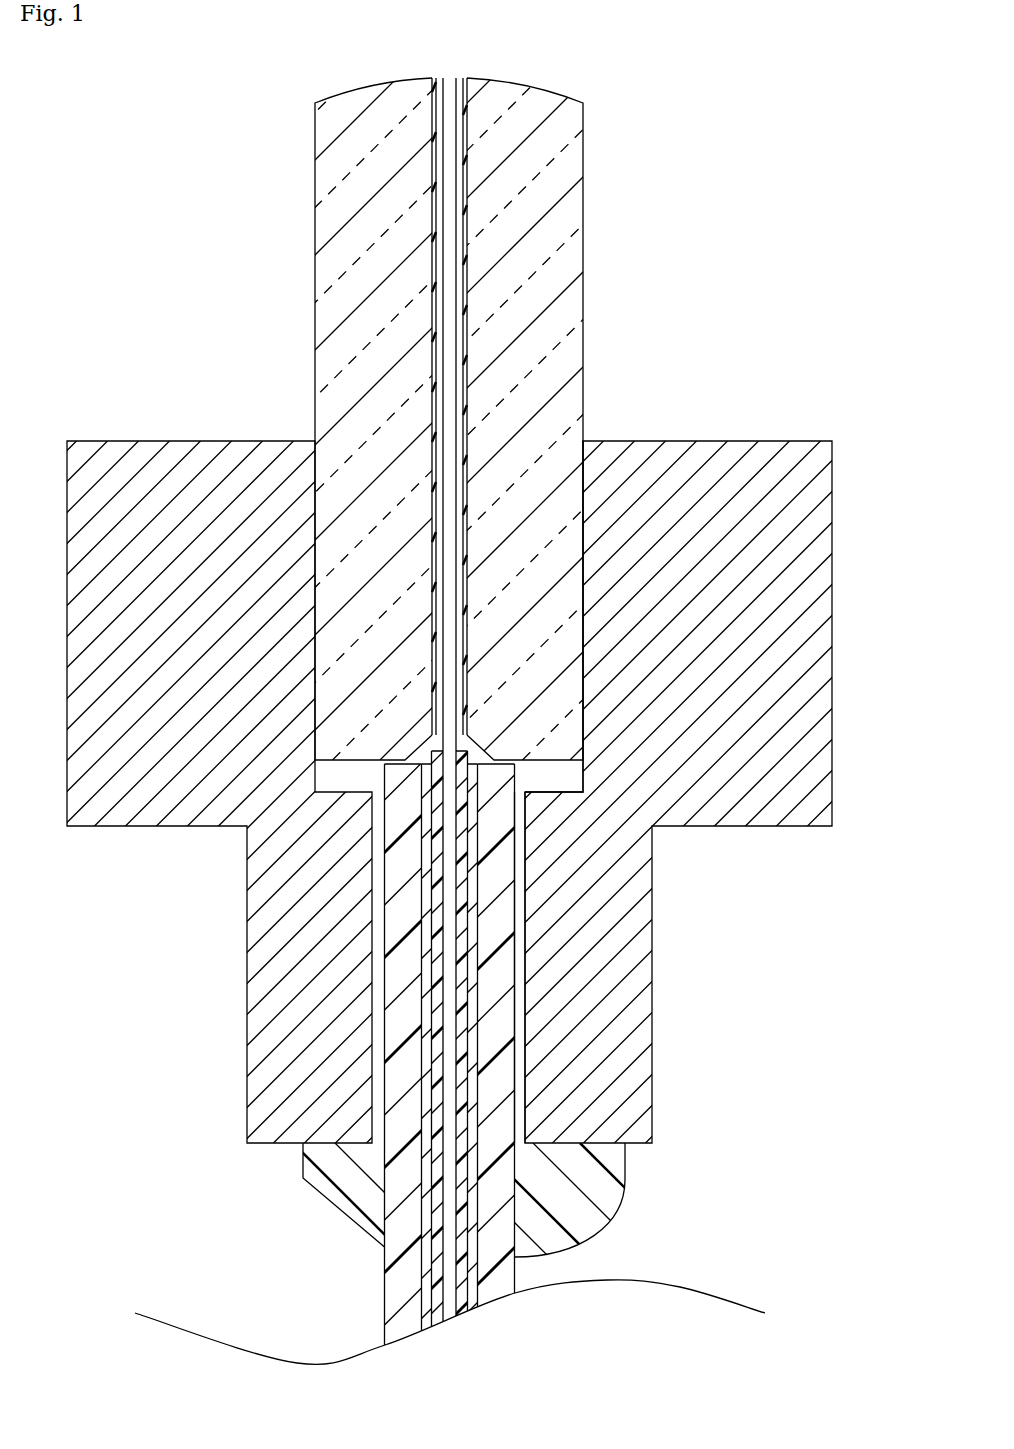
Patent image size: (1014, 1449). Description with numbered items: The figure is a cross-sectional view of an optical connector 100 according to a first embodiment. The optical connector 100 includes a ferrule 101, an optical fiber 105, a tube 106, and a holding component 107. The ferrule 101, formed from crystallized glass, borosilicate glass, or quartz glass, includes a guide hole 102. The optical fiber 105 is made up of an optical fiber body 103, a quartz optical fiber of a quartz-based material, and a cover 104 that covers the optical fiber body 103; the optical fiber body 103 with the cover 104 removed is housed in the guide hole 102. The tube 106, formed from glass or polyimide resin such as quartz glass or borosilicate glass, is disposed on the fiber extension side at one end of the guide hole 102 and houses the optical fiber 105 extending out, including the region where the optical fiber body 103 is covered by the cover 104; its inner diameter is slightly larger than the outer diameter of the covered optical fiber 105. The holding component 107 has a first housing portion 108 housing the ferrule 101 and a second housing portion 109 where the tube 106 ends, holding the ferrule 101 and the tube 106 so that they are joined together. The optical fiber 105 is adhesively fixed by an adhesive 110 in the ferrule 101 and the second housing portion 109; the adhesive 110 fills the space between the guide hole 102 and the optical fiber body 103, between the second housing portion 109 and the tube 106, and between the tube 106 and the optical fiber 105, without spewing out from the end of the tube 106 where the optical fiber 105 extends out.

The optical connector 100 is at (776, 323).
The ferrule 101 is at (583, 188).
The guide hole 102 is at (466, 216).
The optical fiber body 103 is at (463, 1133).
The cover 104 is at (462, 1077).
The optical fiber 105 is at (507, 704).
The tube 106 is at (500, 967).
The holding component 107 is at (833, 606).
The first housing portion 108 is at (583, 576).
The second housing portion 109 is at (527, 893).
The adhesive 110 is at (527, 762).